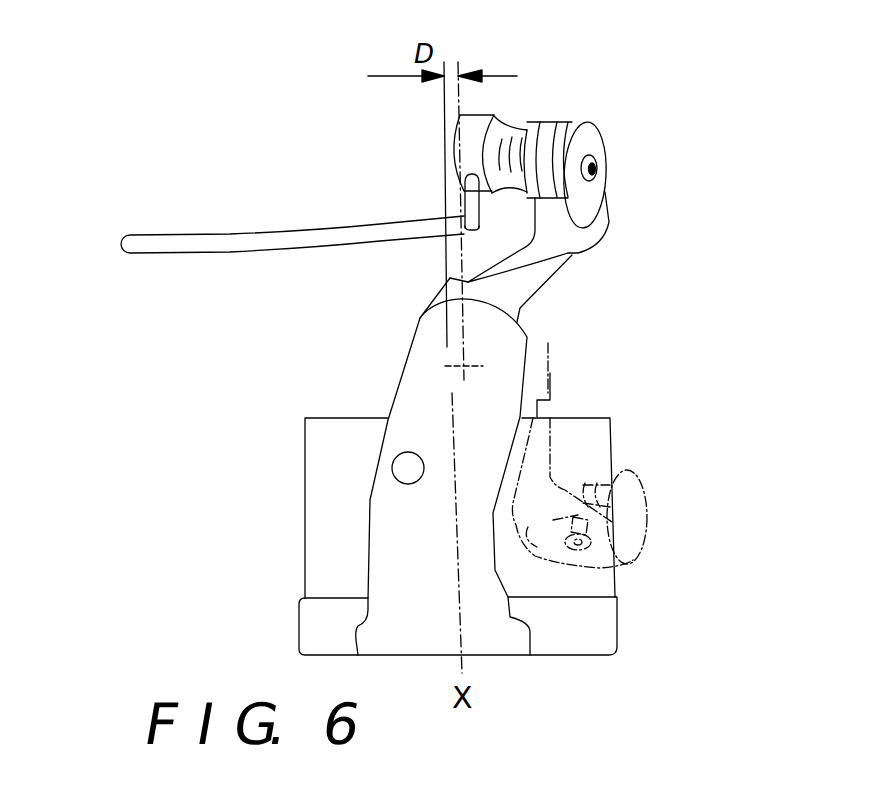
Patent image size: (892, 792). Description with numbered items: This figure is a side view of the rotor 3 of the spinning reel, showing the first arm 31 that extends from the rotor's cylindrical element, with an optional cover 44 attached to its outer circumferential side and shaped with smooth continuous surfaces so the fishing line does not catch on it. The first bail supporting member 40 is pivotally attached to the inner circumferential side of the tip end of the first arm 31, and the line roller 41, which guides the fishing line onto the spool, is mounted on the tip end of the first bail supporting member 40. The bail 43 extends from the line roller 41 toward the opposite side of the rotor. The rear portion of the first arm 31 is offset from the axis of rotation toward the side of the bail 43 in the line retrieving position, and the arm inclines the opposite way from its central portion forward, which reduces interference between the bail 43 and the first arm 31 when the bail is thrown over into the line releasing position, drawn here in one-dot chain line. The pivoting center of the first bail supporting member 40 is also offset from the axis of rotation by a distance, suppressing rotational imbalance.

The rotor 3 is at (623, 598).
The first bail supporting member 40 is at (568, 252).
The line roller 41 is at (500, 128).
The bail 43 is at (273, 243).
The cover 44 is at (533, 466).
The first arm 31 is at (513, 372).